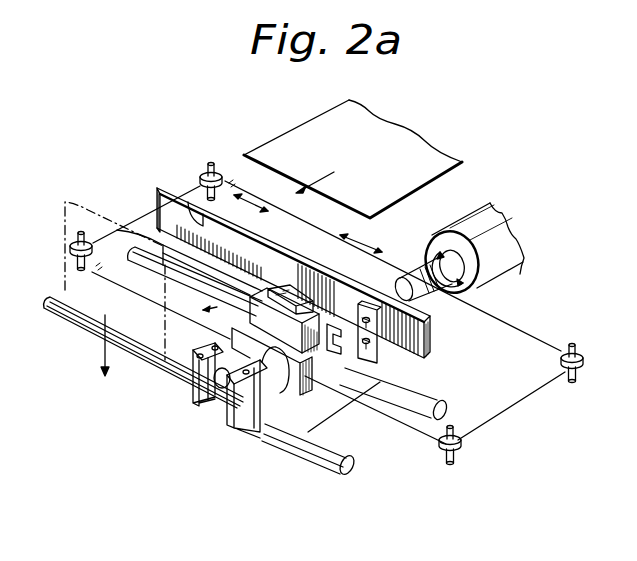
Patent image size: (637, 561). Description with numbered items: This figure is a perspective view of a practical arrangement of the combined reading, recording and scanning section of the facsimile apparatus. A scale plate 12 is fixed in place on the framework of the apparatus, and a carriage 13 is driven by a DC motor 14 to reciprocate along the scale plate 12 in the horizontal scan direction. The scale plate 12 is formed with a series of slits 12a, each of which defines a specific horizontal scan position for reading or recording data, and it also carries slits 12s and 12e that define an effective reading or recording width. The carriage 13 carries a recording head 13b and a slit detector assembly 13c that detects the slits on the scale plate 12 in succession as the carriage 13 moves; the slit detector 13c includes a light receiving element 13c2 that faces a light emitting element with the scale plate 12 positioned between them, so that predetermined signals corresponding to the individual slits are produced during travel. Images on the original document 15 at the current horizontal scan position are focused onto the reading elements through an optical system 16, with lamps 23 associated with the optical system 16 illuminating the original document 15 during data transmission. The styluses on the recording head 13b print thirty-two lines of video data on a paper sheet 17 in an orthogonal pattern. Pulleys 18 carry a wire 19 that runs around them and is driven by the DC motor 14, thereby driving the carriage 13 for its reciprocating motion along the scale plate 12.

The scale plate 12 is at (425, 343).
The slits 12a is at (299, 268).
The slit 12e is at (378, 296).
The slit 12s is at (190, 222).
The carriage 13 is at (262, 448).
The recording head 13b is at (163, 258).
The slit detector assembly 13c is at (386, 371).
The light receiving element 13c2 is at (360, 322).
The DC motor 14 is at (518, 256).
The original document 15 is at (64, 290).
The optical system 16 is at (265, 407).
The paper sheet 17 is at (457, 164).
The pulleys 18 is at (585, 358).
The wire 19 is at (524, 406).
The lamps 23 is at (187, 398).